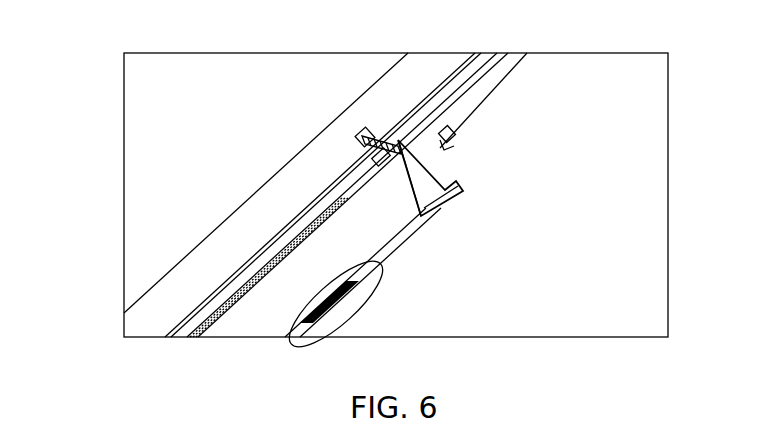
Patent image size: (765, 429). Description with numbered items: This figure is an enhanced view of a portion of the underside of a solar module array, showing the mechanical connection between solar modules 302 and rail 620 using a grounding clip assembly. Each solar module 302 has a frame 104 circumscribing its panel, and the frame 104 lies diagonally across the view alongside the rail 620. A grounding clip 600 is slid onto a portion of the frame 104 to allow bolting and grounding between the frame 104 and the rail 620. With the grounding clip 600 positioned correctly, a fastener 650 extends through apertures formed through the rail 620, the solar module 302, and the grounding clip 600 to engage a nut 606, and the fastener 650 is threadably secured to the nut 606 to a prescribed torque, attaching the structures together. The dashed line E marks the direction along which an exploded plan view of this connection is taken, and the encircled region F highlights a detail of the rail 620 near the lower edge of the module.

The solar module 302 is at (163, 72).
The frame 104 is at (402, 124).
The grounding clip 600 is at (356, 151).
The nut 606 is at (360, 124).
The rail 620 is at (255, 317).
The fastener 650 is at (394, 174).
The line E is at (455, 160).
The detail region F is at (357, 267).